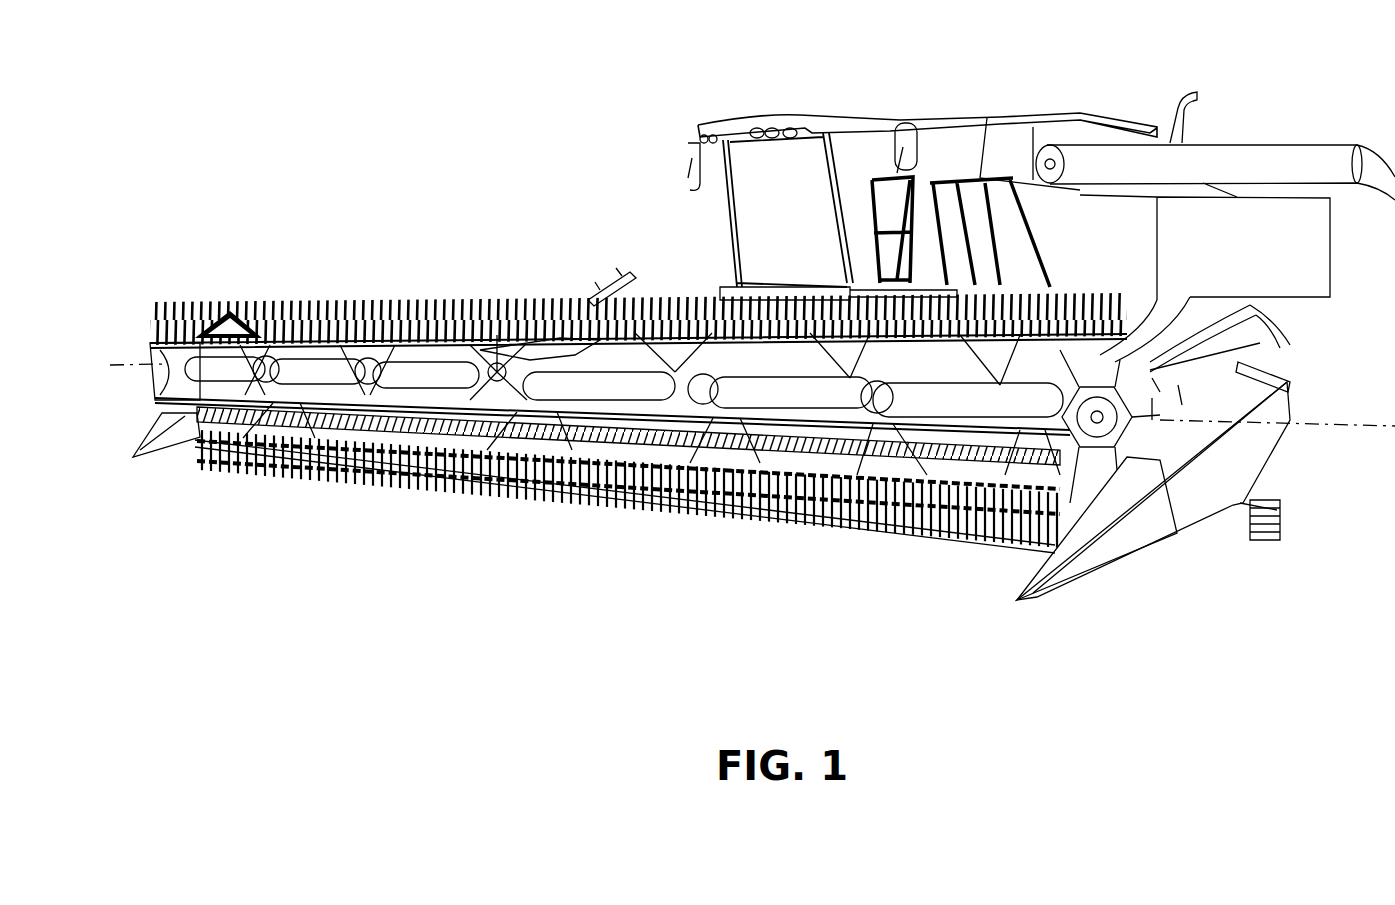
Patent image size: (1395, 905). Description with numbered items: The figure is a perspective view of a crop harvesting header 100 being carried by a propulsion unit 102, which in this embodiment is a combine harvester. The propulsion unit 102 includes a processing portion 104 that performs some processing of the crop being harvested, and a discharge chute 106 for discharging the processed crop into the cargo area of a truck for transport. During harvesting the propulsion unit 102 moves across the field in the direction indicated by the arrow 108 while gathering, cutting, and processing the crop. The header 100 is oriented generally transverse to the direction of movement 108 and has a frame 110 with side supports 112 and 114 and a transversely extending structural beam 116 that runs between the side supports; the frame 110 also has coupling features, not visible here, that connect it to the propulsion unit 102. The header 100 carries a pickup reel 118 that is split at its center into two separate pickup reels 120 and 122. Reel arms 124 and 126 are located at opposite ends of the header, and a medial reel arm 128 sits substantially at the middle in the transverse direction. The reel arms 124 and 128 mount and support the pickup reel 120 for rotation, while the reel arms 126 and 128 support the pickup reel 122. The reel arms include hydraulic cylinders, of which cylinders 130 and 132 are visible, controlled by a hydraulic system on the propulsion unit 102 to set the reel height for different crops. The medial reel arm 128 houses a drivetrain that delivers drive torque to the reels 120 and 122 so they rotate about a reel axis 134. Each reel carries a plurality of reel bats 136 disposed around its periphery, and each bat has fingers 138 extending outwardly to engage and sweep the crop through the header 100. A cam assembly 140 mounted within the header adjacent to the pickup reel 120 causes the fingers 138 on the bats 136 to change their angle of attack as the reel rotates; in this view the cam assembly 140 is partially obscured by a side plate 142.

The crop harvesting header 100 is at (386, 248).
The propulsion unit 102 is at (1088, 69).
The processing portion 104 is at (1318, 293).
The discharge chute 106 is at (1331, 148).
The direction of movement 108 is at (372, 632).
The frame 110 is at (1313, 392).
The side support 112 is at (1187, 520).
The side support 114 is at (160, 438).
The structural beam 116 is at (1290, 367).
The pickup reel 118 is at (567, 528).
The pickup reel 120 is at (570, 387).
The pickup reel 122 is at (455, 382).
The reel arm 124 is at (1267, 403).
The reel arm 126 is at (215, 305).
The medial reel arm 128 is at (558, 333).
The hydraulic cylinder 130 is at (1263, 470).
The hydraulic cylinder 132 is at (607, 298).
The reel axis 134 is at (1310, 424).
The reel bat 136 is at (748, 473).
The finger 138 is at (890, 510).
The cam assembly 140 is at (1140, 455).
The side plate 142 is at (1163, 340).